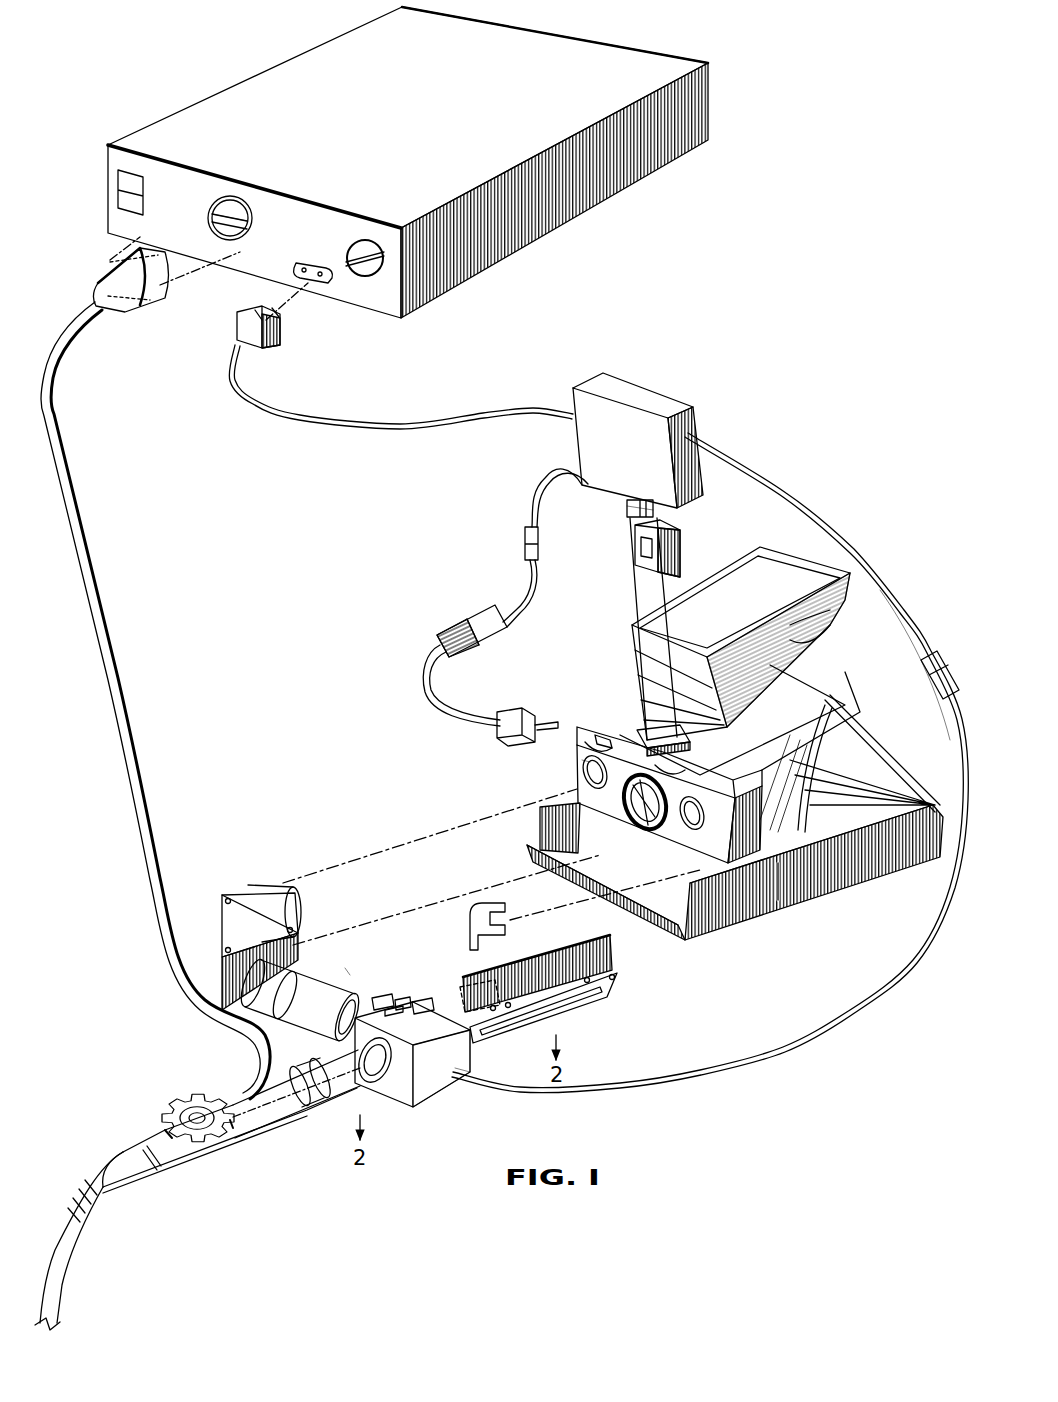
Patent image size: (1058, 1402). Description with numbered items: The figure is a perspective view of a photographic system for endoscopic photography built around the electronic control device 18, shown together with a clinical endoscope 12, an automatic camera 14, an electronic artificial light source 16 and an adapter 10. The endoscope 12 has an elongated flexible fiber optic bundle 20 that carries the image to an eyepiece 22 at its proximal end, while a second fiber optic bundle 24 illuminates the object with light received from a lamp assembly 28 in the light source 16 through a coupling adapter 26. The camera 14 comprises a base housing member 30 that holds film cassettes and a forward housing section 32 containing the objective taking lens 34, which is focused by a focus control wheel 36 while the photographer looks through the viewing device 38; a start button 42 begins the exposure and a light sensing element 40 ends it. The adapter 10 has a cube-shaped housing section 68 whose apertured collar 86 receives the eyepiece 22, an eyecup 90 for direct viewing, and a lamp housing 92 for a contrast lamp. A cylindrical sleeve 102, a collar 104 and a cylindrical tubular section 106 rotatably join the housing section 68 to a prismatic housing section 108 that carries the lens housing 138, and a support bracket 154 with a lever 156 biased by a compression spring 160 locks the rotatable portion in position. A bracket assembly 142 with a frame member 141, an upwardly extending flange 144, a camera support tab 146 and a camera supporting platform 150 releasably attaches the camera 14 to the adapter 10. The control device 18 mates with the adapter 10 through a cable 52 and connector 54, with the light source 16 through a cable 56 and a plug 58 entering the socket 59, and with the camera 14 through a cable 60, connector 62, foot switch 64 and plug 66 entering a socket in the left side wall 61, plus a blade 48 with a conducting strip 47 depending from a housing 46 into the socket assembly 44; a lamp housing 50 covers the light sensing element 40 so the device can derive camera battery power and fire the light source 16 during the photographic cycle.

The adapter 10 is at (348, 970).
The clinical endoscope 12 is at (230, 1150).
The automatic camera 14 is at (862, 712).
The electronic artificial light source 16 is at (640, 48).
The electronic control device 18 is at (662, 380).
The fiber optic bundle 20 is at (72, 1258).
The eyepiece 22 is at (300, 1068).
The fiber optic bundle 24 is at (112, 688).
The adapter 26 is at (143, 298).
The lamp assembly 28 is at (255, 225).
The base housing member 30 is at (820, 873).
The forward housing section 32 is at (592, 730).
The objective taking lens 34 is at (624, 812).
The focus control wheel 36 is at (598, 730).
The viewing device 38 is at (714, 570).
The light sensing element 40 is at (688, 820).
The camera start button 42 is at (585, 762).
The socket assembly 44 is at (712, 742).
The housing 46 is at (700, 425).
The conducting strip 47 is at (636, 500).
The blade 48 is at (627, 508).
The lamp housing 50 is at (680, 545).
The cable 52 is at (912, 640).
The connector 54 is at (945, 672).
The cable 56 is at (440, 420).
The plug 58 is at (262, 345).
The socket 59 is at (333, 275).
The cable 60 is at (562, 472).
The left side wall 61 is at (578, 775).
The connector 62 is at (525, 540).
The foot switch 64 is at (493, 633).
The plug 66 is at (515, 708).
The housing section 68 is at (420, 1107).
The apertured collar 86 is at (368, 1085).
The apertured eyecup 90 is at (441, 1068).
The lamp housing 92 is at (462, 1080).
The cylindrical sleeve 102 is at (380, 998).
The collar 104 is at (330, 967).
The cylindrical tubular section 106 is at (275, 1000).
The prismatic shaped housing section 108 is at (218, 903).
The lens housing 138 is at (280, 888).
The frame member 141 is at (602, 992).
The bracket assembly 142 is at (580, 1013).
The flange 144 is at (580, 940).
The camera support tab 146 is at (465, 990).
The camera supporting platform 150 is at (482, 905).
The support bracket 154 is at (395, 1014).
The lever 156 is at (403, 998).
The compression spring 160 is at (427, 1012).